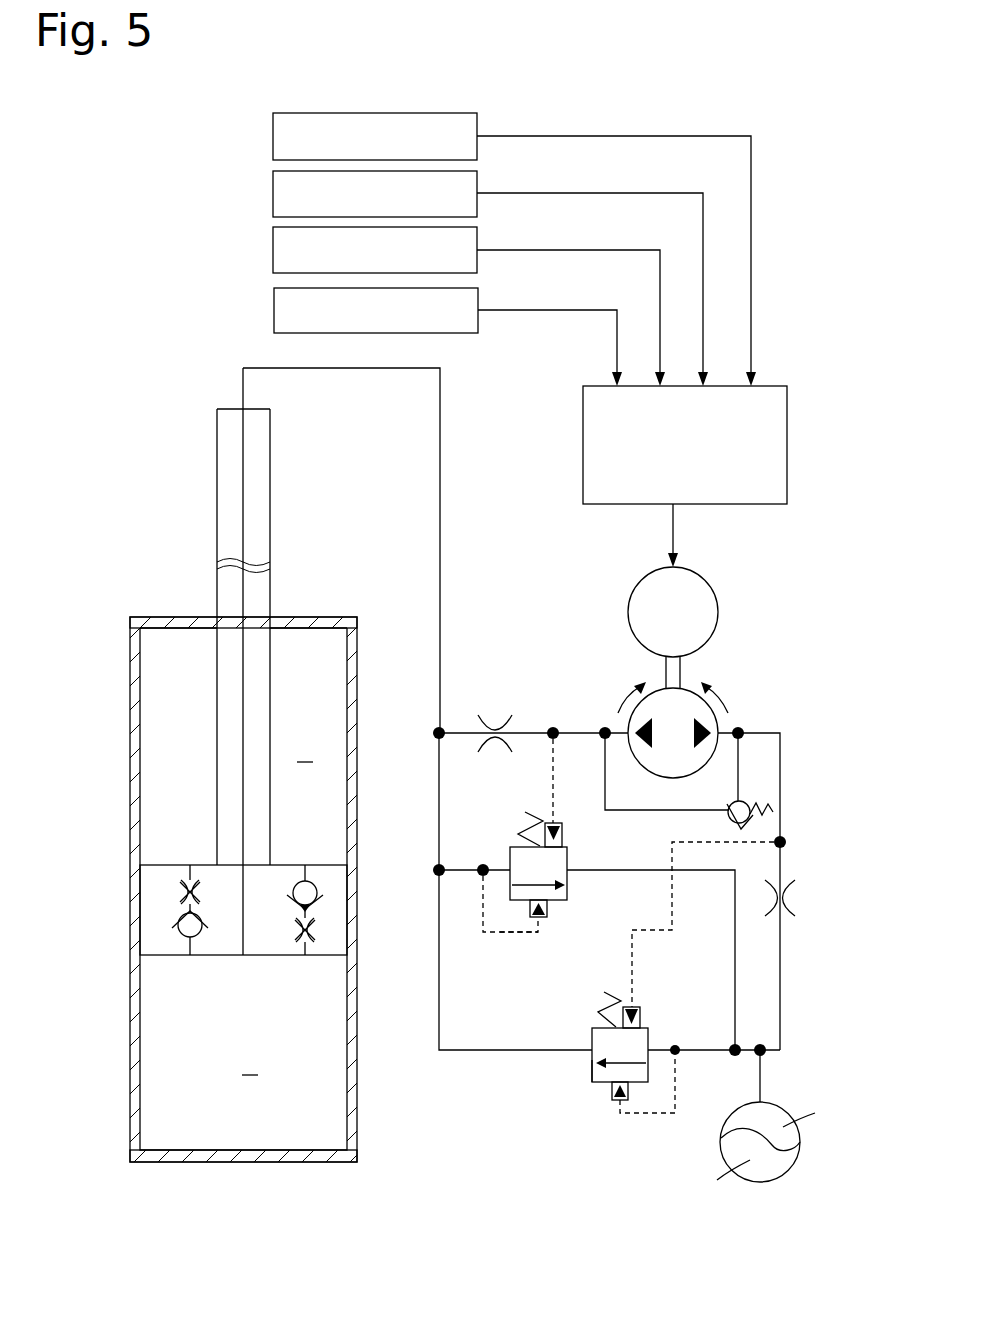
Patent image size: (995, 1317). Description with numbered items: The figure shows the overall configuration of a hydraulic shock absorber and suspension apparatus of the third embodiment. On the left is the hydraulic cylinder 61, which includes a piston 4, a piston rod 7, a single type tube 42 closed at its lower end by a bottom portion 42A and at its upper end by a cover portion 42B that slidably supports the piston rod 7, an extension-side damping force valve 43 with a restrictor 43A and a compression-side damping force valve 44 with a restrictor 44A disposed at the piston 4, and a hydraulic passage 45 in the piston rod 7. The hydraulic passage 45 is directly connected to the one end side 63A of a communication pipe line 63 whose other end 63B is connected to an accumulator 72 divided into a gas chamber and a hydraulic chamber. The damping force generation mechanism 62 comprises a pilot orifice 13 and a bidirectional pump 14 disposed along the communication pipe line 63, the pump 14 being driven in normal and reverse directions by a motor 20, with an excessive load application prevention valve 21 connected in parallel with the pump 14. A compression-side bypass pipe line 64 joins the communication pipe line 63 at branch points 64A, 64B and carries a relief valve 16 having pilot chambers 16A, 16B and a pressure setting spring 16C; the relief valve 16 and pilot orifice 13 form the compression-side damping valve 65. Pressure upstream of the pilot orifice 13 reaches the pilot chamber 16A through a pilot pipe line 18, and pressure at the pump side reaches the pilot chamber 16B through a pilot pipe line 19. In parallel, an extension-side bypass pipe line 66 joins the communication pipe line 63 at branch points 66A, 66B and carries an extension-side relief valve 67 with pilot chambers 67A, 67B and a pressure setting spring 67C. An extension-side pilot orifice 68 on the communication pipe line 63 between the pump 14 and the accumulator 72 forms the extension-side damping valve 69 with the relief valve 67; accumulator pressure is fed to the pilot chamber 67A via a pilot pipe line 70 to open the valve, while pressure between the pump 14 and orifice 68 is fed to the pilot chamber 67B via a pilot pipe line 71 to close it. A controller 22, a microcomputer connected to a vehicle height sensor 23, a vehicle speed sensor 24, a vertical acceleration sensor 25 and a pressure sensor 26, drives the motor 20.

The piston 4 is at (233, 940).
The piston rod 7 is at (260, 492).
The pilot orifice 13 is at (497, 727).
The pump 14 is at (688, 686).
The relief valve 16 is at (567, 888).
The pilot chamber 16A is at (545, 905).
The pilot chamber 16B is at (563, 830).
The spring of switching valve 16C is at (517, 832).
The pilot pipe line 18 is at (480, 905).
The pilot pipe line 19 is at (550, 812).
The motor 20 is at (628, 592).
The excessive load application prevention valve 21 is at (728, 817).
The controller 22 is at (583, 432).
The vehicle height sensor 23 is at (272, 137).
The vehicle speed sensor 24 is at (272, 194).
The vertical acceleration sensor 25 is at (272, 250).
The pressure sensor 26 is at (273, 310).
The tube 42 is at (132, 780).
The bottom portion 42A is at (242, 1157).
The cover portion 42B is at (207, 617).
The extension-side damping force valve 43 is at (185, 928).
The restrictor 43A is at (180, 893).
The compression-side damping force valve 44 is at (318, 882).
The restrictor 44A is at (312, 933).
The hydraulic passage 45 is at (245, 583).
The hydraulic cylinder 61 is at (147, 598).
The damping force generation mechanism 62 is at (572, 712).
The communication pipe line 63 is at (785, 775).
The one end side 63A is at (247, 382).
The other end 63B is at (765, 1068).
The compression-side bypass pipe line 64 is at (702, 875).
The branch point 64A is at (435, 730).
The branch point 64B is at (765, 1047).
The compression-side damping valve 65 is at (526, 944).
The extension-side bypass pipe line 66 is at (492, 1052).
The branch point 66A is at (437, 868).
The branch point 66B is at (732, 1056).
The extension-side relief valve 67 is at (588, 1042).
The pilot chamber 67A is at (610, 1088).
The pilot chamber 67B is at (642, 1013).
The pressure setting spring 67C is at (604, 1008).
The extension-side pilot orifice 68 is at (787, 898).
The extension-side damping valve 69 is at (583, 1079).
The pilot pipe line 70 is at (665, 1120).
The pilot pipe line 71 is at (637, 948).
The accumulator 72 is at (797, 1162).